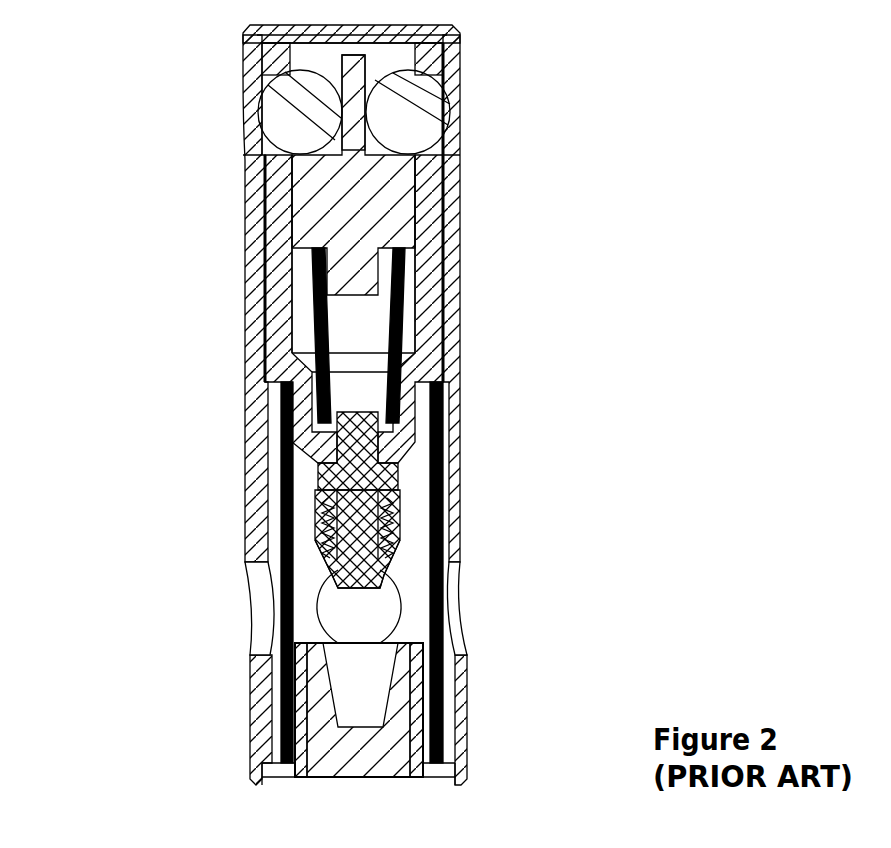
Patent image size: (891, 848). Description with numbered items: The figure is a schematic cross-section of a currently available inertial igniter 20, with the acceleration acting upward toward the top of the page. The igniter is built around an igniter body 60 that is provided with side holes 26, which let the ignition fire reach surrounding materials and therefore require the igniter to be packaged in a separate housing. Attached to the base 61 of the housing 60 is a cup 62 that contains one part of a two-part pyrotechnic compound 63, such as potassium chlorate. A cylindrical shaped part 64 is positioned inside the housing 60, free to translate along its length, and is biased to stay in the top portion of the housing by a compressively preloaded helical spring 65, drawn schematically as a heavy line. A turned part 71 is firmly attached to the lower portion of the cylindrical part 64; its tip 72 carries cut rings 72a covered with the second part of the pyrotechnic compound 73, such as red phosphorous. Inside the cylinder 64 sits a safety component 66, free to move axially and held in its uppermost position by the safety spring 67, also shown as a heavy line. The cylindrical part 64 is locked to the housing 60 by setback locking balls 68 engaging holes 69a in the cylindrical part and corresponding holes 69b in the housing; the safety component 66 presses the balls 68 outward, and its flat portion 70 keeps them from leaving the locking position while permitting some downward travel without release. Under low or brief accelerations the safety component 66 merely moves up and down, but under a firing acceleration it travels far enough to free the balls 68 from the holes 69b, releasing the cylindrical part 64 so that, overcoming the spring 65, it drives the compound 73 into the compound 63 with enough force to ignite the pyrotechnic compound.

The inertial igniter 20 is at (548, 215).
The side holes 26 is at (255, 610).
The igniter body 60 is at (243, 404).
The base 61 is at (318, 785).
The cup 62 is at (296, 690).
The first part of two-part pyrotechnic compound 63 is at (330, 742).
The cylindrical shaped part 64 is at (285, 317).
The helical spring 65 is at (283, 522).
The safety component 66 is at (327, 205).
The safety spring 67 is at (404, 322).
The setback locking balls 68 is at (280, 118).
The holes 69a is at (463, 131).
The corresponding holes 69b is at (445, 78).
The flat portion 70 is at (372, 66).
The turned part 71 is at (373, 473).
The tip 72 is at (385, 517).
The cut rings 72a is at (387, 543).
The second part of two-part pyrotechnic compound 73 is at (405, 552).